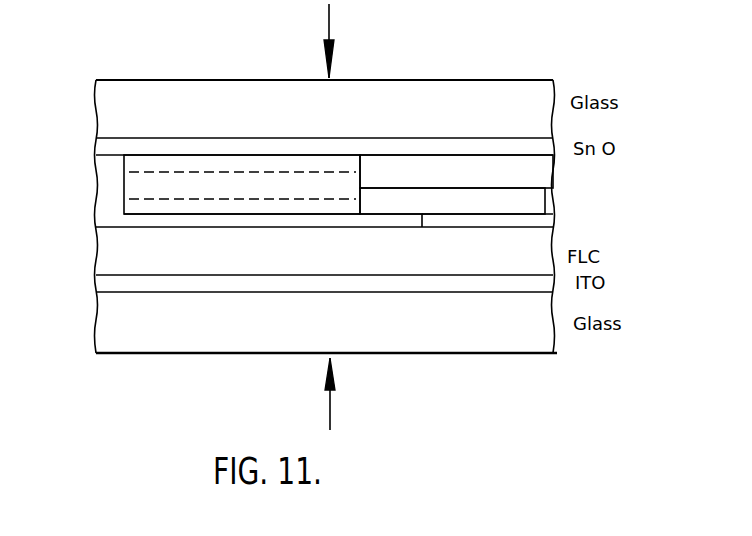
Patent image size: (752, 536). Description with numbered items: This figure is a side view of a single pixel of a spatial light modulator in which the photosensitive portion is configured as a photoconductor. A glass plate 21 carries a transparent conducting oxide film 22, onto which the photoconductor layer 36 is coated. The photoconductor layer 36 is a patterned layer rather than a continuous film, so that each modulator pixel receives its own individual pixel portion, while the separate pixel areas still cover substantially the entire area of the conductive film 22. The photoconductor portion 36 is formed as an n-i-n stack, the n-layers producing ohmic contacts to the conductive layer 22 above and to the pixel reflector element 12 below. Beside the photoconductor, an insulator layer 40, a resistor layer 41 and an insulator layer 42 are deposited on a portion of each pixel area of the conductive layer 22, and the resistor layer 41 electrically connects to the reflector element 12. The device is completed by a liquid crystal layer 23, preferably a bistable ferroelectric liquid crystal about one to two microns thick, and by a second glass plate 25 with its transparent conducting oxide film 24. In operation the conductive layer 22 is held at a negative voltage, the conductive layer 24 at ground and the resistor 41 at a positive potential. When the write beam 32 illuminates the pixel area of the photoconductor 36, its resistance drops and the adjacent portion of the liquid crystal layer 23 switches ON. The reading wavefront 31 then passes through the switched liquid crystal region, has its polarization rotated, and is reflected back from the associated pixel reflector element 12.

The pixel reflector element 12 is at (253, 227).
The glass plate 21 is at (503, 90).
The transparent conducting oxide film 22 is at (120, 146).
The liquid crystal layer 23 is at (113, 251).
The transparent conducting oxide film 24 is at (148, 292).
The glass plate 25 is at (471, 341).
The reading wavefront 31 is at (330, 407).
The write beam 32 is at (329, 27).
The photoconductor layer 36 is at (142, 183).
The insulator layer 40 is at (535, 176).
The resistor layer 41 is at (485, 200).
The insulator layer 42 is at (545, 221).